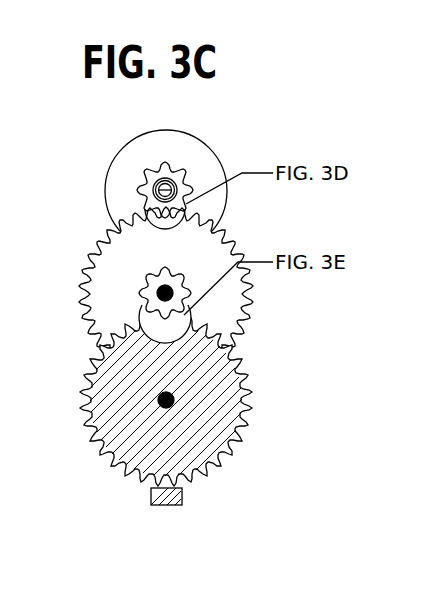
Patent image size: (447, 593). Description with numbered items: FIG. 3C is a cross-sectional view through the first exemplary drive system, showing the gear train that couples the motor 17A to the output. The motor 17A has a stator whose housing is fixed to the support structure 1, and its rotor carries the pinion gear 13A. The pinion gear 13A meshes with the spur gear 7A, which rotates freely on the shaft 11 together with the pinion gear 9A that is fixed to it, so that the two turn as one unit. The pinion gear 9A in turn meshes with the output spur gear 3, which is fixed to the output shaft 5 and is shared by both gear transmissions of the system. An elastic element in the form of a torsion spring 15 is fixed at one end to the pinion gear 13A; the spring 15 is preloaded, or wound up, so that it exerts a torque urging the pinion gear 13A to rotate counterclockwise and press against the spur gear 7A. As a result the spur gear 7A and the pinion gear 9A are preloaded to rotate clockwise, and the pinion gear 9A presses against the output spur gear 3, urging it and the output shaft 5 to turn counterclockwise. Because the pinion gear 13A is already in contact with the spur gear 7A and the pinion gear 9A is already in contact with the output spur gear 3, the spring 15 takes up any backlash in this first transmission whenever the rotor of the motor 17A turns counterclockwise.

The support structure 1 is at (151, 497).
The output spur gear 3 is at (233, 450).
The output shaft 5 is at (158, 400).
The spur gear 7A is at (82, 308).
The pinion gear 9A is at (150, 284).
The shaft 11 is at (157, 294).
The pinion gear 13A is at (152, 165).
The spring 15 is at (173, 185).
The motor 17A is at (106, 190).